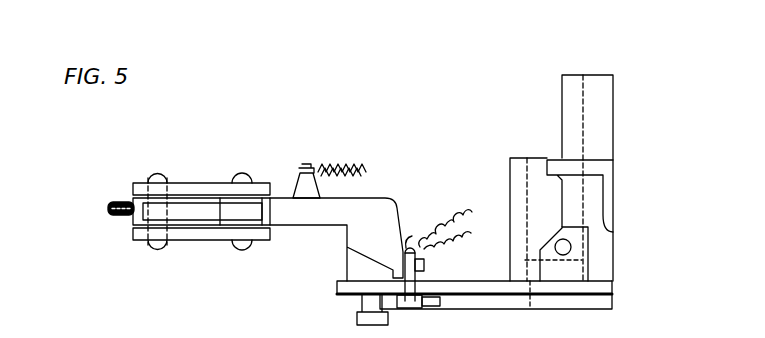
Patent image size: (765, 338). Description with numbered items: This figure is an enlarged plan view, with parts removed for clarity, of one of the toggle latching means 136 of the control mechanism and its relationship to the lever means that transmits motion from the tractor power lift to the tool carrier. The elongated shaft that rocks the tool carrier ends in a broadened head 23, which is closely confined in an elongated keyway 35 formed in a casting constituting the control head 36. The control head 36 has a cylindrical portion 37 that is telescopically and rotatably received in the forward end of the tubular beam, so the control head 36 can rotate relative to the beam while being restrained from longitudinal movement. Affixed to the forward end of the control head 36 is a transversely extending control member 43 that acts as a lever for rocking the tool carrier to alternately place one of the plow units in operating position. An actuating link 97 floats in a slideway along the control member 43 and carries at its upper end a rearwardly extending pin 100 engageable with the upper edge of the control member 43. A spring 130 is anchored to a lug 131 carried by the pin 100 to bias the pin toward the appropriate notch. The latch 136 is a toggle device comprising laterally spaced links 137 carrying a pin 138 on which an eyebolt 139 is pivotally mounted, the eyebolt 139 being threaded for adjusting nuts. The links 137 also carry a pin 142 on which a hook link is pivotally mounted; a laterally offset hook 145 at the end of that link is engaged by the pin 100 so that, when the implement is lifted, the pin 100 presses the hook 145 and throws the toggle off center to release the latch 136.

The head 23 is at (543, 300).
The keyway 35 is at (532, 188).
The control head 36 is at (510, 233).
The cylindrical portion 37 is at (562, 107).
The control member 43 is at (588, 295).
The actuating link 97 is at (411, 302).
The pin 100 is at (425, 281).
The spring 130 is at (435, 219).
The lug 131 is at (410, 246).
The latching means 136 is at (298, 236).
The links 137 is at (216, 183).
The pin 138 is at (160, 178).
The eyebolt 139 is at (117, 217).
The pin 142 is at (262, 172).
The hook 145 is at (424, 266).